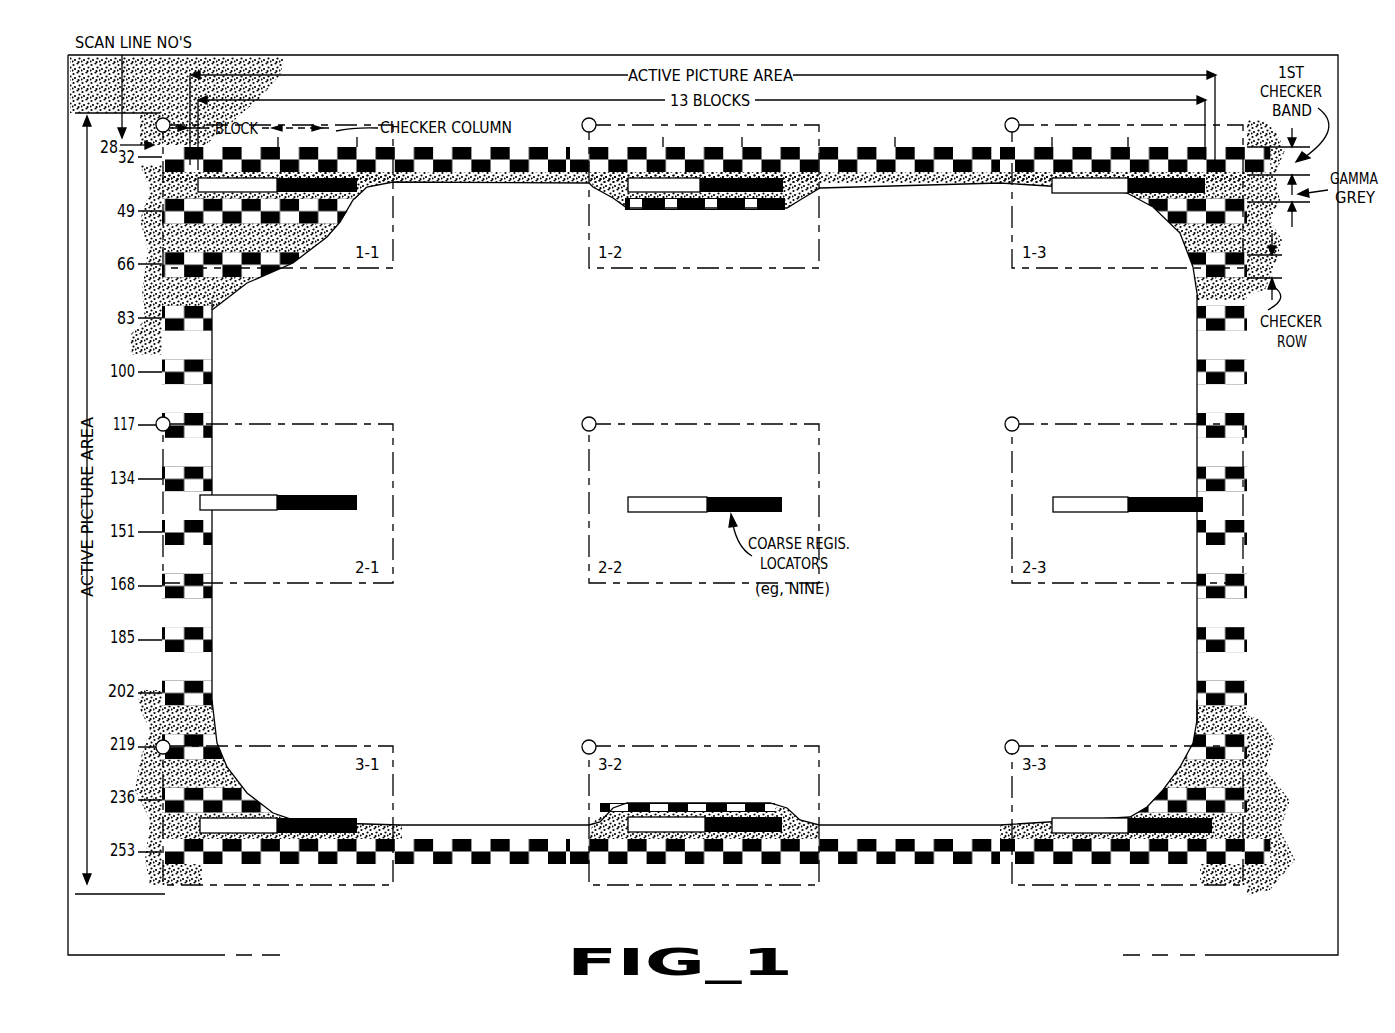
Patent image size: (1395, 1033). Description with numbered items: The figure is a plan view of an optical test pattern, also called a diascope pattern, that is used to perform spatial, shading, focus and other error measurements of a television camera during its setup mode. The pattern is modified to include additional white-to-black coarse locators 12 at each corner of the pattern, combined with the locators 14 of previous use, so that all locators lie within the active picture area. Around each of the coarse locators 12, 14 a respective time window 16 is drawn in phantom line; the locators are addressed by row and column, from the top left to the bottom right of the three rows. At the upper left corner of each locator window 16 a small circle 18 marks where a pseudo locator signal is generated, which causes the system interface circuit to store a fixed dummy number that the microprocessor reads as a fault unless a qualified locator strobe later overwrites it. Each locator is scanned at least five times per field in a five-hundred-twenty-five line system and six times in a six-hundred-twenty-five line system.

The coarse locator 12 is at (656, 503).
The locator 14 is at (701, 505).
The time window 16 is at (703, 505).
The small circle 18 is at (581, 430).